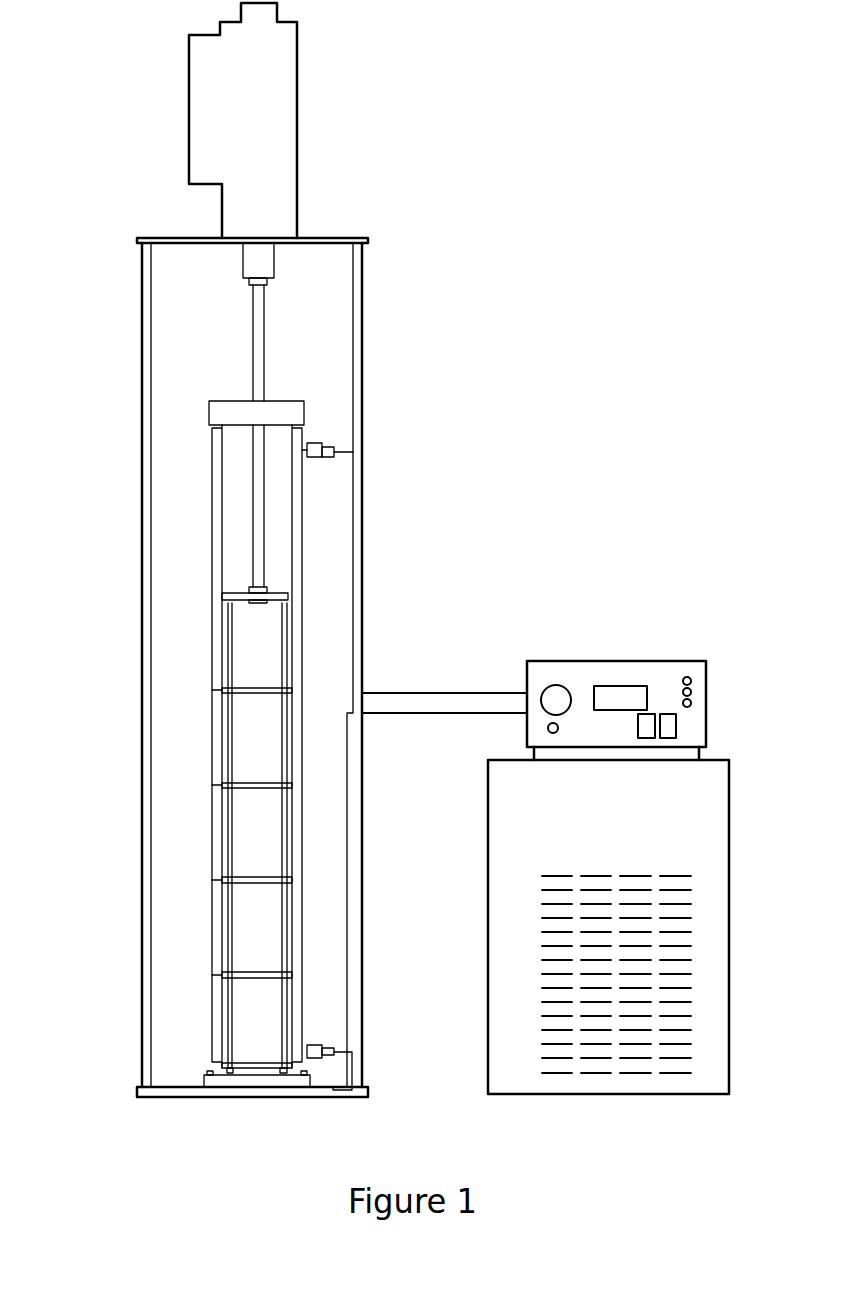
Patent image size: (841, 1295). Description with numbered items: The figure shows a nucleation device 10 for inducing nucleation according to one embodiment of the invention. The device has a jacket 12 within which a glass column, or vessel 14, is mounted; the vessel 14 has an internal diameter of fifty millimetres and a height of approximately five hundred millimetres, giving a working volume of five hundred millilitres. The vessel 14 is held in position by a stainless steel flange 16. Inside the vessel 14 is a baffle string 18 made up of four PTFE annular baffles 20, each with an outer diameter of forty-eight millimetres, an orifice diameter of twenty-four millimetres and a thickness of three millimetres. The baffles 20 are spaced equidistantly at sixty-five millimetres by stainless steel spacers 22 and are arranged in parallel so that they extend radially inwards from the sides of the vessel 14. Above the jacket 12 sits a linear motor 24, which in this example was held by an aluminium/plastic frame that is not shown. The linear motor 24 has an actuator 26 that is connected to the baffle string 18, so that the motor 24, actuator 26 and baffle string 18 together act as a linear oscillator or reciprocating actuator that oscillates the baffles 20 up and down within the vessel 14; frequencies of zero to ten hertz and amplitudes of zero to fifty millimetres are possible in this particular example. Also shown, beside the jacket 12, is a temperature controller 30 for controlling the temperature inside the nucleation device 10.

The nucleation device 10 is at (405, 291).
The jacket 12 is at (142, 267).
The glass column (vessel) 14 is at (212, 677).
The stainless steel flange 16 is at (208, 417).
The baffle string 18 is at (250, 592).
The PTFE annular baffle 20 is at (257, 978).
The stainless steel spacer 22 is at (282, 635).
The linear motor 24 is at (297, 42).
The actuator 26 is at (258, 386).
The temperature controller 30 is at (684, 809).